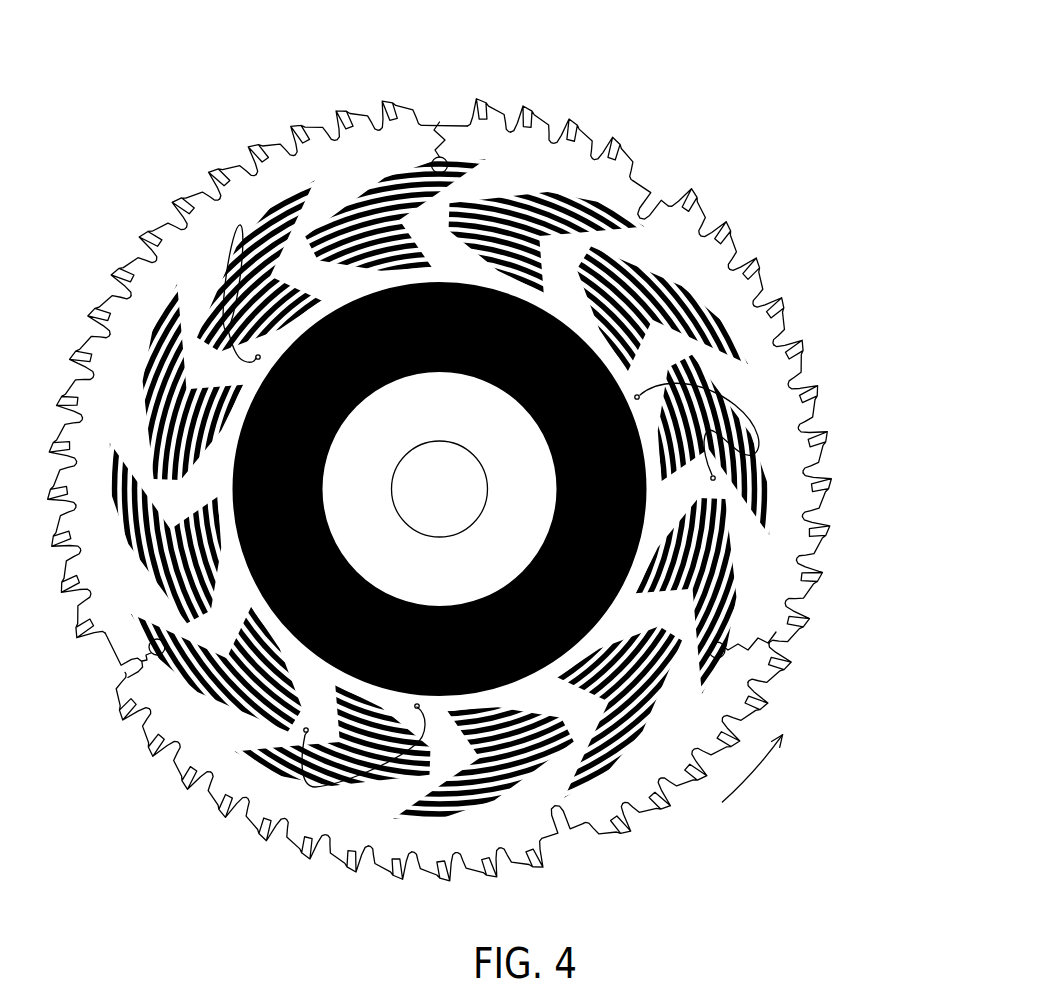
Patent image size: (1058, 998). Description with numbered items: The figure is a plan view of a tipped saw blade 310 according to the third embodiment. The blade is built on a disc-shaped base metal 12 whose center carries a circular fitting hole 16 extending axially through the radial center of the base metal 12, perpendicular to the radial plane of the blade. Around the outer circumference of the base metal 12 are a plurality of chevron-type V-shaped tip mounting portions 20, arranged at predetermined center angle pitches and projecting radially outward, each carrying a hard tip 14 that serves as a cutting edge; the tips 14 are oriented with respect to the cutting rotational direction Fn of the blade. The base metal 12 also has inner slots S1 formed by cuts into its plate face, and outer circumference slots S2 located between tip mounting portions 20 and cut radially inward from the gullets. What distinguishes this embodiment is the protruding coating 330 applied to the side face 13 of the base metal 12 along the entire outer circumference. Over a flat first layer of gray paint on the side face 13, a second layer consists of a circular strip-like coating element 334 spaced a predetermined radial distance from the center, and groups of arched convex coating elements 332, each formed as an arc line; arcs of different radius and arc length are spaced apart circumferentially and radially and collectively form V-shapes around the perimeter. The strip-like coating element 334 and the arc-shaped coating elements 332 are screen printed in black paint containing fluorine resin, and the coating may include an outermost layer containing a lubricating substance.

The tipped saw blade 310 is at (500, 448).
The base metal 12 is at (459, 448).
The side face 13 is at (459, 448).
The tips 14 is at (723, 227).
The fitting hole 16 is at (462, 456).
The tip mounting portions 20 is at (783, 328).
The protruding coating 330 is at (530, 489).
The coating elements 332 is at (727, 577).
The strip-like coating element 334 is at (613, 598).
The inner slots S1 is at (226, 226).
The outer circumference slots S2 is at (411, 97).
The cutting rotational direction Fn is at (758, 768).